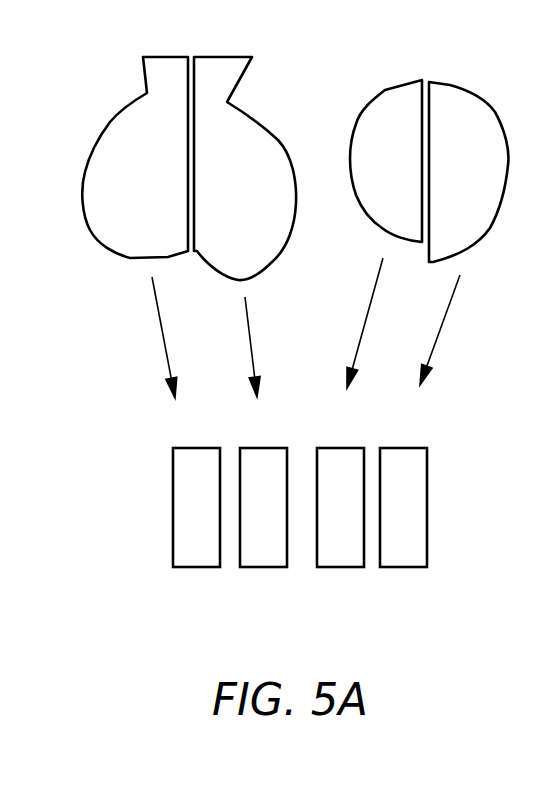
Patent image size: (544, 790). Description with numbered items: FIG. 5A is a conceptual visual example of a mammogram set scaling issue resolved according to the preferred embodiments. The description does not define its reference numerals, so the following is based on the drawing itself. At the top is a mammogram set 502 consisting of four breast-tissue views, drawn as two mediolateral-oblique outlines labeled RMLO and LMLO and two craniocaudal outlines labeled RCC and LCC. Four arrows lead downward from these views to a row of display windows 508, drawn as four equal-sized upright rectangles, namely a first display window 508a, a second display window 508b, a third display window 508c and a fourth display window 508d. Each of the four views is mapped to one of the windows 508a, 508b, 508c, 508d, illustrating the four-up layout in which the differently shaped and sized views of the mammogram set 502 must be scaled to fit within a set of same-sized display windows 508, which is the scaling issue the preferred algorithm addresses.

The mammogram image set (RMLO, LMLO, RCC, LCC views) 502 is at (105, 75).
The set of view-specific image processing blocks 508 is at (243, 535).
The processing block for RMLO view 508a is at (198, 570).
The processing block for LMLO view 508b is at (267, 570).
The processing block for RCC view 508c is at (348, 570).
The processing block for LCC view 508d is at (408, 570).